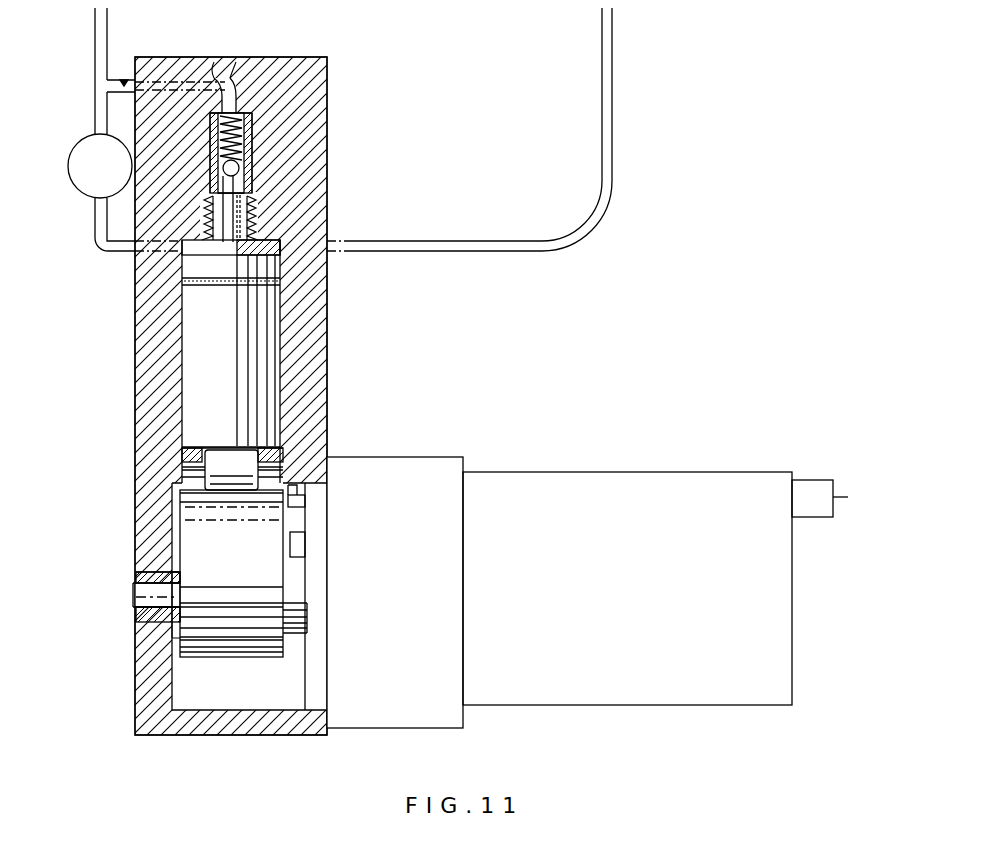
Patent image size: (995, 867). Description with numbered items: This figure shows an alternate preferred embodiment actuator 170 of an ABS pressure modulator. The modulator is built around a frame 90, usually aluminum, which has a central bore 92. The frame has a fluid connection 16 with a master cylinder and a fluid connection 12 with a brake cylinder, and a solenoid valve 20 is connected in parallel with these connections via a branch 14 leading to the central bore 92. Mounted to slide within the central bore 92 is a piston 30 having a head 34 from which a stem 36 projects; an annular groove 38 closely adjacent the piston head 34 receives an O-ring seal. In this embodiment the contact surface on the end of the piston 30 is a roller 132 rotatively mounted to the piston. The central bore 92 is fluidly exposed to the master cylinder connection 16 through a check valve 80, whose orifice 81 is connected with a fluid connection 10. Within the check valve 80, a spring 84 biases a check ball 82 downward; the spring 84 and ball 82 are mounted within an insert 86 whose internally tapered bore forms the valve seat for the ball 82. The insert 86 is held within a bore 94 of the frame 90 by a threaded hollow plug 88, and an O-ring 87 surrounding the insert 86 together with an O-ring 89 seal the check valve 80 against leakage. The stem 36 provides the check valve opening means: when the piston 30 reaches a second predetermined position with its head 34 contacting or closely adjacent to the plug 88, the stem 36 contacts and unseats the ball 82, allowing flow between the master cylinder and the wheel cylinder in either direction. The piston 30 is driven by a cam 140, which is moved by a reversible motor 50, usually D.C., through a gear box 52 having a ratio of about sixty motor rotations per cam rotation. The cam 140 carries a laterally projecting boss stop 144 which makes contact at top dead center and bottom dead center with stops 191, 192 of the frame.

The fluid connection 10 is at (210, 80).
The fluid connection 12 is at (430, 250).
The branch 14 is at (97, 110).
The fluid connection 16 is at (110, 79).
The solenoid valve 20 is at (73, 177).
The piston 30 is at (178, 360).
The head 34 is at (311, 264).
The stem 36 is at (245, 198).
The annular groove 38 is at (200, 286).
The motor 50 is at (560, 490).
The gear box 52 is at (417, 470).
The check valve 80 is at (252, 137).
The orifice 81 is at (230, 80).
The check ball 82 is at (239, 168).
The spring 84 is at (240, 113).
The insert 86 is at (244, 126).
The O-ring 87 is at (243, 215).
The threaded hollow plug 88 is at (252, 231).
The O-ring 89 is at (276, 250).
The frame 90 is at (150, 332).
The central bore 92 is at (186, 425).
The bore 94 is at (225, 82).
The roller 132 is at (232, 460).
The cam 140 is at (190, 533).
The boss stop 144 is at (298, 490).
The actuator 170 is at (327, 58).
The stop 191 is at (298, 502).
The stop 192 is at (298, 543).